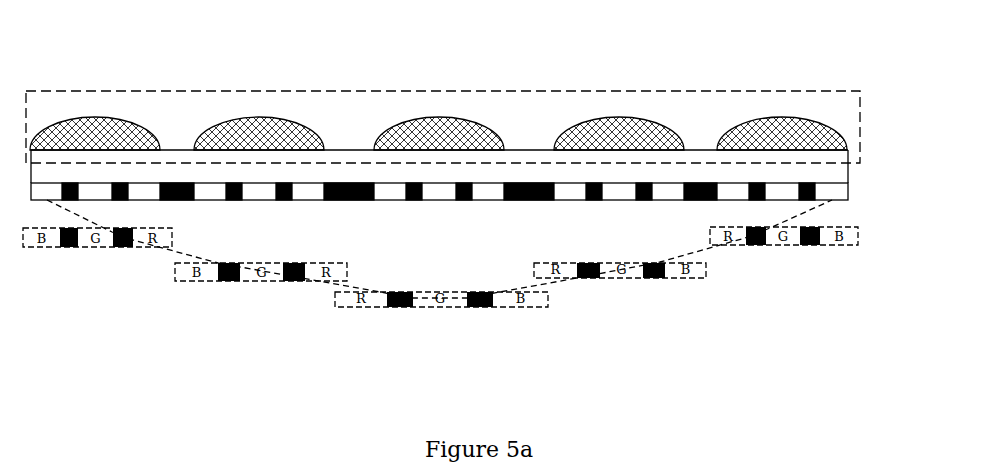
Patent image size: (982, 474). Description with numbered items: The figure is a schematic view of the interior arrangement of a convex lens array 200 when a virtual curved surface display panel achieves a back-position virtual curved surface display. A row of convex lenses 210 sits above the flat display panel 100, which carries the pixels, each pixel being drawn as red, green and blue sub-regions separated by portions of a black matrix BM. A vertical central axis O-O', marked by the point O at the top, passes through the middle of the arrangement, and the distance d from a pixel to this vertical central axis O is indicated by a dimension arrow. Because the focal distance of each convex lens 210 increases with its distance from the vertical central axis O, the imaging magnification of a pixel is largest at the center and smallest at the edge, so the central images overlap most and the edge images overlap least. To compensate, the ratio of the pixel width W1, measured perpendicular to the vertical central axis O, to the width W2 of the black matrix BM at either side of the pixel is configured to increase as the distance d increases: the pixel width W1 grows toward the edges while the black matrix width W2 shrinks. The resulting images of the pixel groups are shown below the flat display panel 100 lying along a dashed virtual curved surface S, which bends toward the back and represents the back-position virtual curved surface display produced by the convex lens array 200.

The flat display panel 100 is at (848, 192).
The convex lens array 200 is at (860, 125).
The convex lens 210 is at (475, 125).
The black matrix BM is at (536, 183).
The virtual curved surface S is at (718, 257).
The vertical central axis O-O' O is at (440, 367).
The distance from the pixel to the vertical central axis d is at (262, 153).
The width of a pixel W1 is at (324, 203).
The width of a black matrix W2 is at (554, 203).